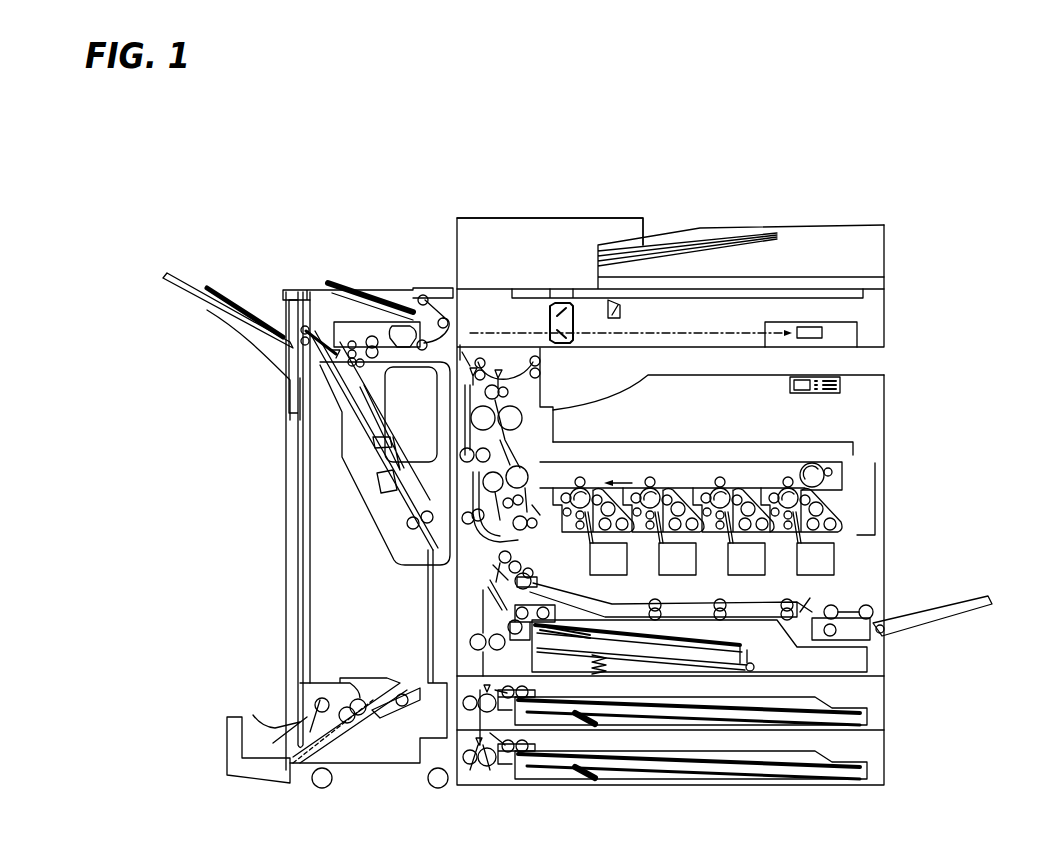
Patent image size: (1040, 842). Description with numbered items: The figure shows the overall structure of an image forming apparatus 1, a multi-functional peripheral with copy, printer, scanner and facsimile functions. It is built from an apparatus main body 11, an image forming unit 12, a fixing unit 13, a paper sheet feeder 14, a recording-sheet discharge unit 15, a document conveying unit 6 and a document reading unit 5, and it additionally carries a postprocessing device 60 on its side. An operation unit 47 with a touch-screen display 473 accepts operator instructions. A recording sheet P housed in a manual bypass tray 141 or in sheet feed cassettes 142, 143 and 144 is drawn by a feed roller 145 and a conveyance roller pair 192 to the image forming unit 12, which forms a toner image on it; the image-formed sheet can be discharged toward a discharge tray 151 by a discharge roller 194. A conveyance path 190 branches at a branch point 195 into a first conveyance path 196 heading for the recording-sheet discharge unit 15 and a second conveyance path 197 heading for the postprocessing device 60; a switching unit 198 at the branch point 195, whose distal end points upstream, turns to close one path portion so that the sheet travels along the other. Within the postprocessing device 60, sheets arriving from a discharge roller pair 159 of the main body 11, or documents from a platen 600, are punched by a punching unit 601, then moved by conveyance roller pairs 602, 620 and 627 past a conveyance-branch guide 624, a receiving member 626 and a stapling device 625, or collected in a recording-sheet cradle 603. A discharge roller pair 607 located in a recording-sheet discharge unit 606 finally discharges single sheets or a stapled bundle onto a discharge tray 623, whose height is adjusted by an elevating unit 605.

The image forming apparatus 1 is at (717, 163).
The document reading unit 5 is at (470, 217).
The document conveying unit 6 is at (763, 217).
The apparatus main body 11 is at (888, 307).
The image forming unit 12 is at (853, 467).
The fixing unit 13 is at (450, 262).
The paper sheet feeder 14 is at (985, 695).
The recording-sheet discharge unit 15 is at (837, 367).
The operation unit 47 is at (845, 389).
The postprocessing device 60 is at (253, 468).
The manual bypass tray 141 is at (958, 618).
The sheet feed cassette 142 is at (868, 665).
The sheet feed cassette 143 is at (868, 718).
The sheet feed cassette 144 is at (868, 772).
The feed roller 145 is at (527, 593).
The discharge tray 151 is at (603, 400).
The discharge roller pair 159 is at (480, 326).
The conveyance path 190 is at (420, 517).
The conveyance roller pair 192 is at (535, 548).
The discharge roller 194 is at (527, 360).
The branch point 195 is at (476, 364).
The first conveyance path 196 is at (492, 361).
The second conveyance path 197 is at (458, 340).
The switching unit 198 is at (536, 373).
The display 473 is at (792, 382).
The platen 600 is at (322, 288).
The punching unit 601 is at (370, 322).
The conveyance roller pair 602 is at (405, 325).
The recording-sheet cradle 603 is at (393, 460).
The elevating unit 605 is at (300, 688).
The recording-sheet discharge unit 606 is at (415, 325).
The discharge roller pair 607 is at (362, 345).
The conveyance roller pair 620 is at (356, 320).
The discharge tray 623 is at (167, 280).
The conveyance-branch guide 624 is at (355, 362).
The stapling device 625 is at (378, 490).
The receiving member 626 is at (385, 443).
The conveyance roller pair 627 is at (503, 567).
The recording sheet P is at (713, 642).